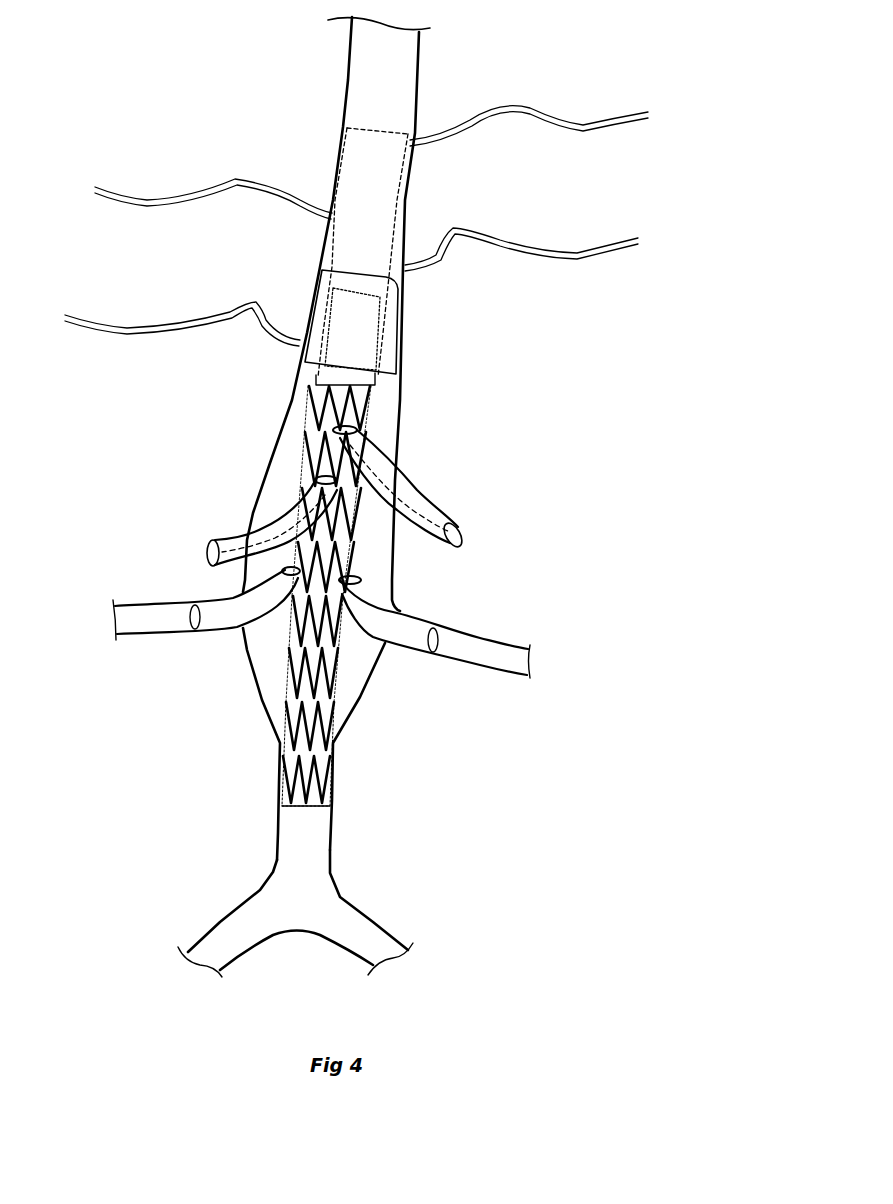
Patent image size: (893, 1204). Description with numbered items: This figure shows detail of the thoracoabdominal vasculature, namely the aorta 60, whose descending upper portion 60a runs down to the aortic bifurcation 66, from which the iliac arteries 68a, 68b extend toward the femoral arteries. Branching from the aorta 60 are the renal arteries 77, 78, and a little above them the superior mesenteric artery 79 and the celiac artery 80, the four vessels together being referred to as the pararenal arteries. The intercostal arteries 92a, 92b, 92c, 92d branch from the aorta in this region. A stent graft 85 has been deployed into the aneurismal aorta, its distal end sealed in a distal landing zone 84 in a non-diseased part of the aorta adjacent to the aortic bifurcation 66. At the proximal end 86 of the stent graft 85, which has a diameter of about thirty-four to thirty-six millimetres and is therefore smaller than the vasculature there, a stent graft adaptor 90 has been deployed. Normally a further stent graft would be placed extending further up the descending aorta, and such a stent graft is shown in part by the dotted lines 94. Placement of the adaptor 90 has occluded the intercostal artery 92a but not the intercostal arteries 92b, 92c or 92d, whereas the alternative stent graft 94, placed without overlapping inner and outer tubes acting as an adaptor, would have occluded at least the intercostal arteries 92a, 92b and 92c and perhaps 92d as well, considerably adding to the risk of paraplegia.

The aorta (upper portion) 60a is at (354, 80).
The aorta 60 is at (332, 842).
The aortic bifurcation 66 is at (290, 932).
The iliac artery 68a is at (222, 923).
The iliac artery 68b is at (377, 925).
The renal artery 77 is at (148, 605).
The renal artery 78 is at (512, 640).
The superior mesenteric artery 79 is at (214, 540).
The celiac artery 80 is at (461, 513).
The distal landing zone 84 is at (337, 783).
The stent graft 85 is at (292, 640).
The proximal end of the stent graft 86 is at (300, 383).
The stent graft adaptor 90 is at (390, 333).
The intercostal artery 92a is at (104, 328).
The intercostal artery 92b is at (196, 187).
The intercostal artery 92c is at (587, 254).
The intercostal artery 92d is at (584, 127).
The alternative stent graft (dotted lines) 94 is at (358, 178).